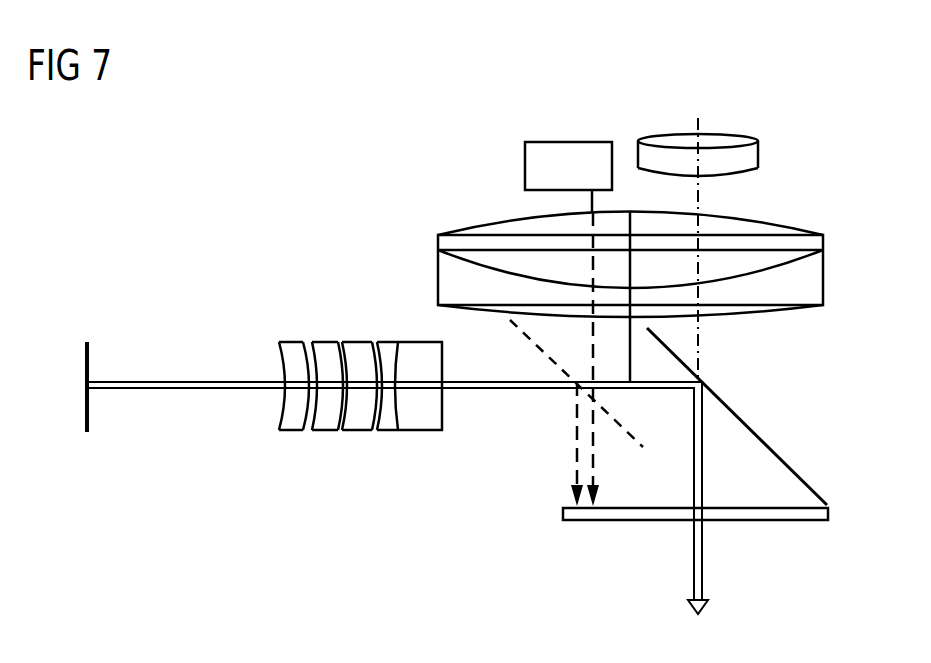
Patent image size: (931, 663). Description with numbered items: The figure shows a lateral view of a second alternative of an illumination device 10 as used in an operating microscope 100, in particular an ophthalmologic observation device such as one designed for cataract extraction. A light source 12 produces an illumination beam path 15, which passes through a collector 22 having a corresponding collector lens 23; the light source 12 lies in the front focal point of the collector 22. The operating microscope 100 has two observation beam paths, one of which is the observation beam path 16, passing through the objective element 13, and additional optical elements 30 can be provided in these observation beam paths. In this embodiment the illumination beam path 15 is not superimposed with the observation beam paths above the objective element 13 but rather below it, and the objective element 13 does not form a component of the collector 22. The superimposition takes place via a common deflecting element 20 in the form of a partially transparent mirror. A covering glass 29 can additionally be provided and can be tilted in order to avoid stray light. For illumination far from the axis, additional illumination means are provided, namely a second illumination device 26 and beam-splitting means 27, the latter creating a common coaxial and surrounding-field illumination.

The operating microscope 100 is at (802, 112).
The illumination device 10 is at (290, 248).
The light source 12 is at (86, 367).
The illumination beam path 15 is at (190, 360).
The collector 22 is at (401, 462).
The collector lens 23 is at (352, 340).
The objective element 13 is at (462, 228).
The second illumination device 26 is at (569, 140).
The additional optical element 30 is at (719, 139).
The observation beam path 16 is at (702, 346).
The deflecting element 20 is at (757, 428).
The beam-splitting means 27 is at (535, 447).
The covering glass 29 is at (640, 522).